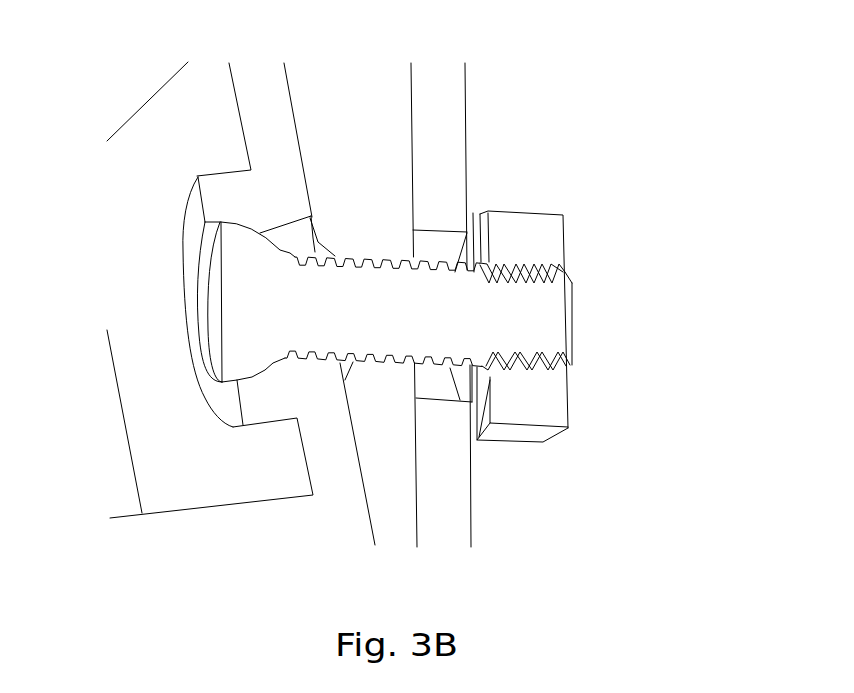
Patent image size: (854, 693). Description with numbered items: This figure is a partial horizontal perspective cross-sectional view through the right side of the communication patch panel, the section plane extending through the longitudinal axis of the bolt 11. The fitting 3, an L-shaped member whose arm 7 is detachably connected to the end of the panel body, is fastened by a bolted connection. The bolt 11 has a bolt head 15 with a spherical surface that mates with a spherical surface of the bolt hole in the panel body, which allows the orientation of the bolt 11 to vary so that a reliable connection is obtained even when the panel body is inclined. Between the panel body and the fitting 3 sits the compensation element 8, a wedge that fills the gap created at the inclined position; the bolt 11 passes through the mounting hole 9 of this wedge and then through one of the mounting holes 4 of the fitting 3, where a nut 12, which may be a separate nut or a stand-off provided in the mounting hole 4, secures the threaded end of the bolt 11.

The fitting 3 is at (452, 500).
The mounting hole 4 is at (428, 248).
The arm 7 is at (468, 305).
The compensation element 8 is at (369, 120).
The mounting hole 9 is at (380, 368).
The bolt 11 is at (540, 325).
The nut 12 is at (537, 247).
The bolt head 15 is at (250, 295).